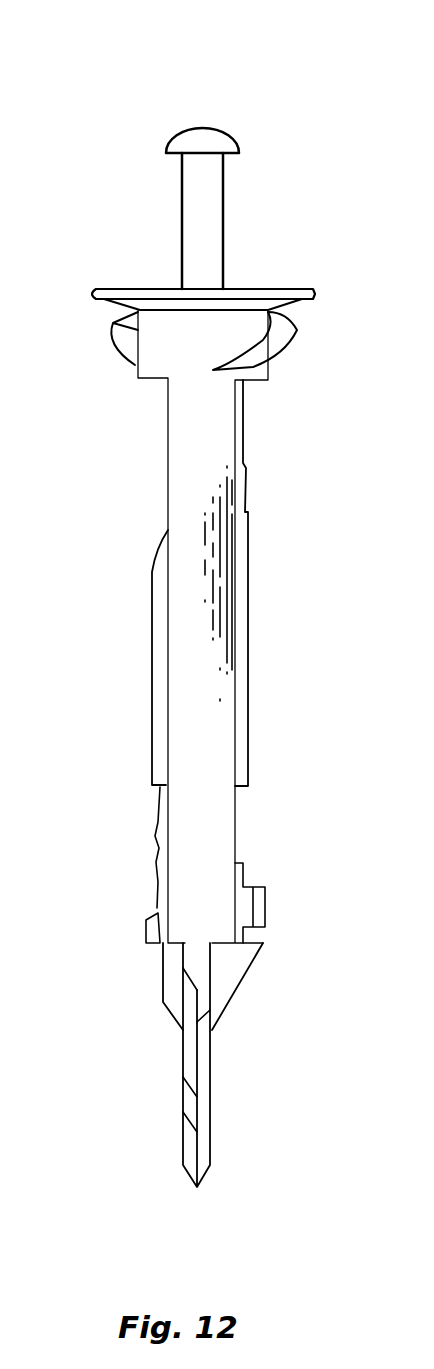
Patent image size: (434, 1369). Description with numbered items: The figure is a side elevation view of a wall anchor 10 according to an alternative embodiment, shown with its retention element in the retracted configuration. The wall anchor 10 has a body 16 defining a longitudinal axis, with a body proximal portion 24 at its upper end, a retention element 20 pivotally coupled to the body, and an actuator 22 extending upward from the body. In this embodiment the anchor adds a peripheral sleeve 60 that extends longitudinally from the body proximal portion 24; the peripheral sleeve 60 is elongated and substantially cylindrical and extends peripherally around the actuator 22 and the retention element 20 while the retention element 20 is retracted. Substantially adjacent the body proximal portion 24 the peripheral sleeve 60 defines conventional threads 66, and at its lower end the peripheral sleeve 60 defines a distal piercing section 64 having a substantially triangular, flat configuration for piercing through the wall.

The wall anchor 10 is at (327, 107).
The actuator 22 is at (223, 242).
The body 16 is at (147, 260).
The body proximal portion 24 is at (100, 300).
The threads 66 is at (282, 353).
The retention element 20 is at (282, 640).
The peripheral sleeve 60 is at (235, 829).
The distal piercing section 64 is at (207, 1088).